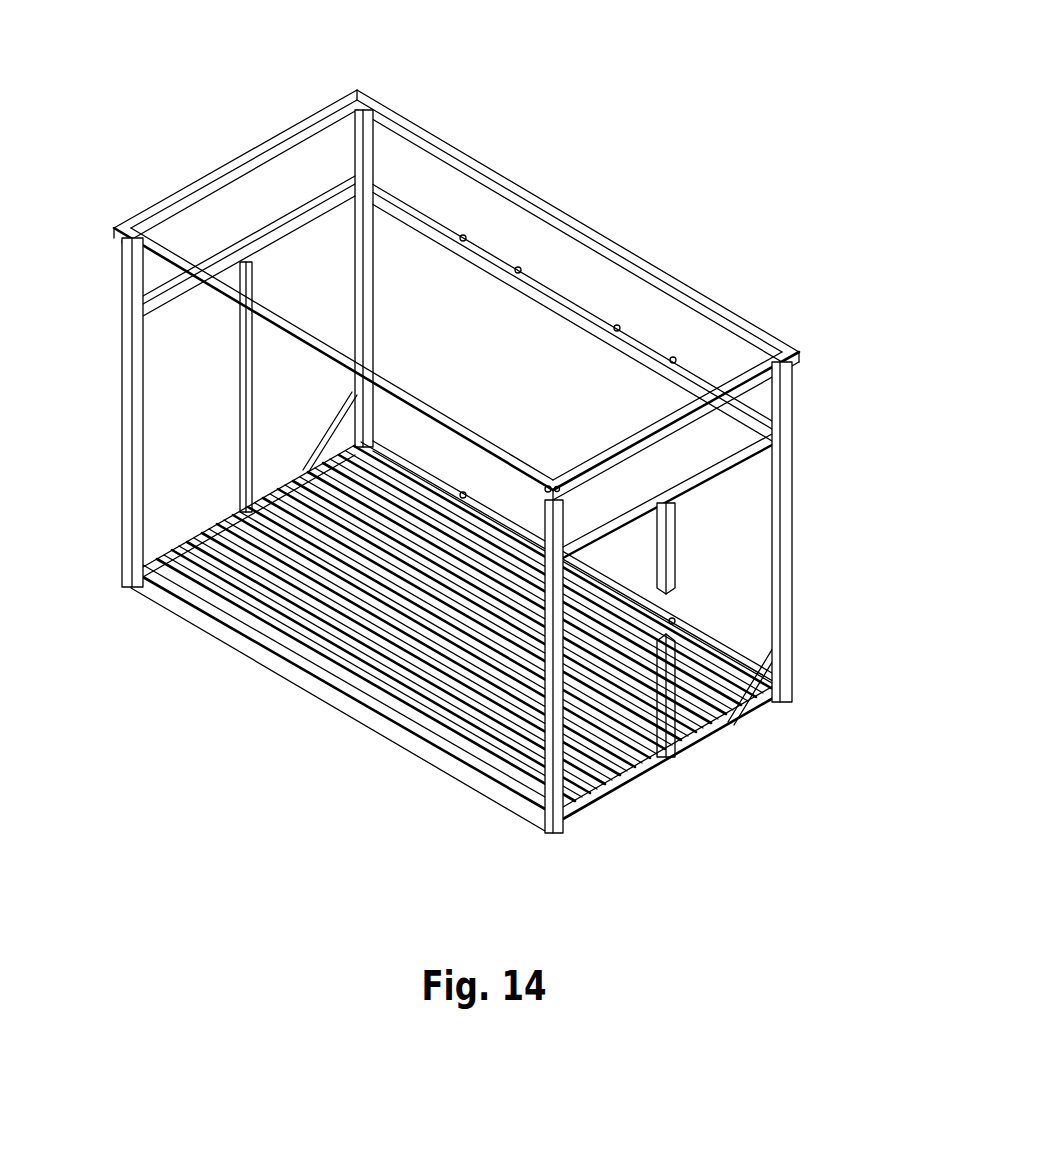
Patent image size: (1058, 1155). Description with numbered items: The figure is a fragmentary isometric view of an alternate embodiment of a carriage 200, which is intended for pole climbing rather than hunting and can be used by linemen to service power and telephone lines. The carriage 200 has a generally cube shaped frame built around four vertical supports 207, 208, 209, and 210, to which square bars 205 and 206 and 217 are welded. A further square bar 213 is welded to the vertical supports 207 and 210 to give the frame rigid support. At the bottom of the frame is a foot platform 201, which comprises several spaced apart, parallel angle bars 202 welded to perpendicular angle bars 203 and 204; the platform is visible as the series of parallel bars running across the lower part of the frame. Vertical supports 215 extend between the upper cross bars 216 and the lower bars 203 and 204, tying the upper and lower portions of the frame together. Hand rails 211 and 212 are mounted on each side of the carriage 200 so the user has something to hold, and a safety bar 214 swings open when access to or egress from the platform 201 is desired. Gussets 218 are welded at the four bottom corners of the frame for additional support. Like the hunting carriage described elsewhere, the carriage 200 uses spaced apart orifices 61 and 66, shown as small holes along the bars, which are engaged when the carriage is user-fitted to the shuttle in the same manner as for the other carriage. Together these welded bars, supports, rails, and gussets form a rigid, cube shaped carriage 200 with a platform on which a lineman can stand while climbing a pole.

The carriage 200 is at (652, 52).
The foot platform 201 is at (435, 590).
The angle bars 202 is at (457, 690).
The angle bar 203 is at (690, 740).
The angle bar 204 is at (203, 530).
The square bar 205 is at (245, 637).
The square bar 206 is at (727, 652).
The vertical support 207 is at (787, 500).
The vertical support 208 is at (559, 784).
The vertical support 209 is at (125, 405).
The vertical support 210 is at (368, 160).
The hand rail 211 is at (765, 372).
The hand rail 212 is at (220, 180).
The square bar 213 is at (665, 278).
The safety bar 214 is at (395, 387).
The vertical supports 215 is at (245, 385).
The upper cross bars 216 is at (300, 213).
The square bar 217 is at (705, 376).
The gussets 218 is at (768, 683).
The orifices 61 is at (680, 612).
The orifices 66 is at (463, 238).